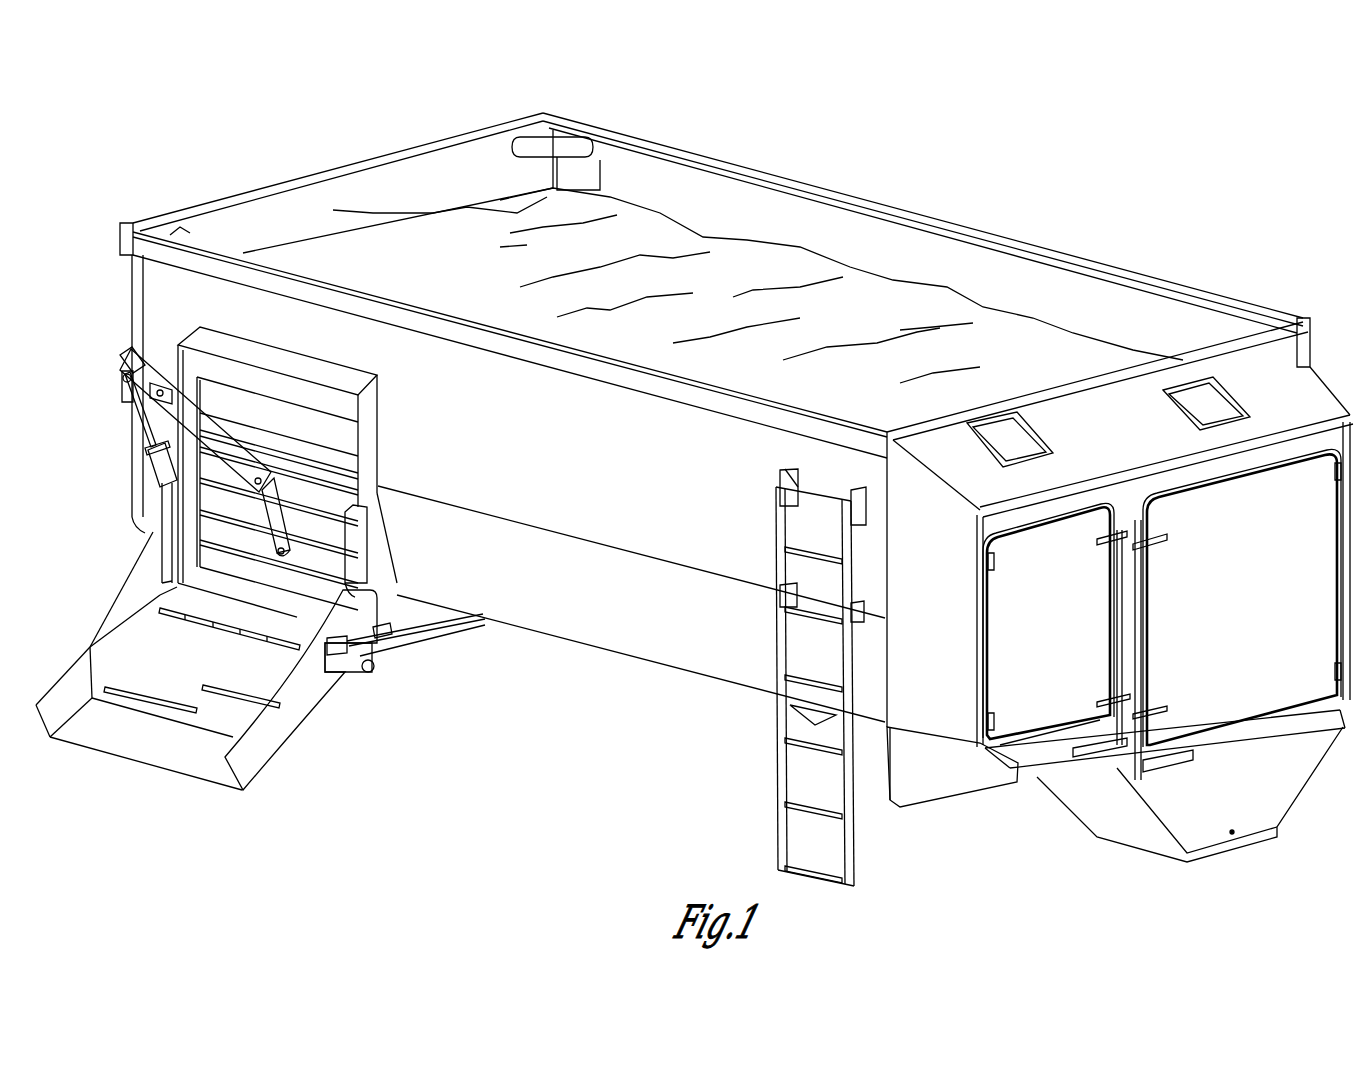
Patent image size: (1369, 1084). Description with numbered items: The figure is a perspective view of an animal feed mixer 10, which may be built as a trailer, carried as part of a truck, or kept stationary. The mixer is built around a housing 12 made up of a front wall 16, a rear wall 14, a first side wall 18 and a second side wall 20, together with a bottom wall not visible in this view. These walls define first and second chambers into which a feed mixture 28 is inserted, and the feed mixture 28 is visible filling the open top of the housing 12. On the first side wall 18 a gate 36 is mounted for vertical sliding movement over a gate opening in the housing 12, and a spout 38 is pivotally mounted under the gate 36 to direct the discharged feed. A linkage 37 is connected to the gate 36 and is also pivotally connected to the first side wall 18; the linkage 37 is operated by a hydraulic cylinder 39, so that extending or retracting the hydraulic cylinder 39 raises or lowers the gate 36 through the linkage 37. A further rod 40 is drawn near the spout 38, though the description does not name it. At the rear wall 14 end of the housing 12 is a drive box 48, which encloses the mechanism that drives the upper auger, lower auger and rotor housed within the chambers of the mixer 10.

The animal feed mixer 10 is at (702, 492).
The housing 12 is at (468, 118).
The rear wall 14 is at (1083, 377).
The front wall 16 is at (400, 150).
The first side wall 18 is at (603, 350).
The second side wall 20 is at (1003, 238).
The feed mixture 28 is at (717, 270).
The gate 36 is at (230, 502).
The linkage 37 is at (140, 350).
The spout 38 is at (317, 695).
The hydraulic cylinder 39 is at (153, 467).
The link rod 40 is at (418, 620).
The drive box 48 is at (1307, 383).